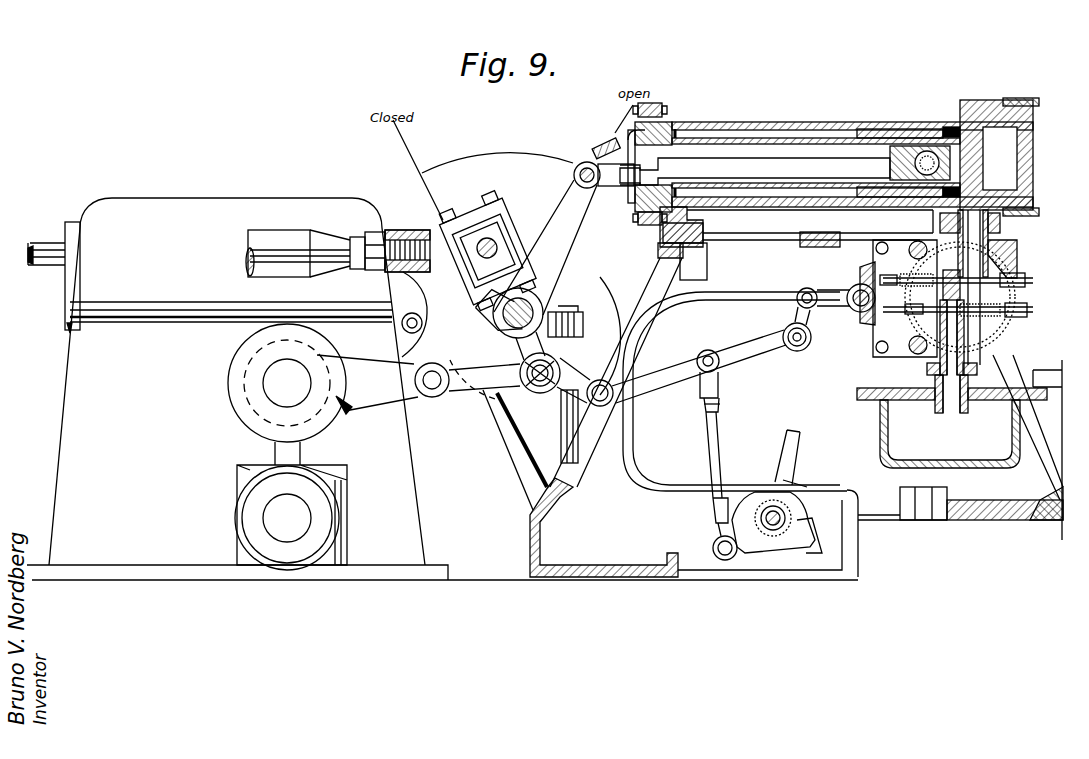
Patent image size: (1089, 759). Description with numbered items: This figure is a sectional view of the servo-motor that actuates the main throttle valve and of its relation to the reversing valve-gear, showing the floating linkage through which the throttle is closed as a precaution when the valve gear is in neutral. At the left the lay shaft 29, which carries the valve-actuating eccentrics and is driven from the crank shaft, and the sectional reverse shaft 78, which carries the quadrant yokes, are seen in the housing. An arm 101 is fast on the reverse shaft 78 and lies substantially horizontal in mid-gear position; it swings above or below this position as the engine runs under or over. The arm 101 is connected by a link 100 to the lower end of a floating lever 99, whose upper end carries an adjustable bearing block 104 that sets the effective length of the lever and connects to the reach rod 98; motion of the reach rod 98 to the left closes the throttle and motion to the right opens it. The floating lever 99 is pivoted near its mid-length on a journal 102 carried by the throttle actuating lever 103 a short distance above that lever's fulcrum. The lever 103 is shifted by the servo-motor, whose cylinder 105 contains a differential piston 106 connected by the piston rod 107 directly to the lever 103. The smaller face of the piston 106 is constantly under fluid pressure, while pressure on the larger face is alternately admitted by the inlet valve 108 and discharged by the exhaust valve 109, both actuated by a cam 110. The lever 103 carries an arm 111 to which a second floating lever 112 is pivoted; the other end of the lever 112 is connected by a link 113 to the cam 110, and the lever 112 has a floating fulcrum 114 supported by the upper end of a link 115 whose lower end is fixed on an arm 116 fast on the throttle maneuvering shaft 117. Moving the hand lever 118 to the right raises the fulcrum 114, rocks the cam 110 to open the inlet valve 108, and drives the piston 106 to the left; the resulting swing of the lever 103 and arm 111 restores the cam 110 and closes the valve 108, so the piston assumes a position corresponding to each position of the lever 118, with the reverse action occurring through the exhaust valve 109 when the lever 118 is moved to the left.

The lay shaft 29 is at (290, 518).
The reverse shaft 78 is at (287, 394).
The reach rod 98 is at (302, 235).
The floating lever 99 is at (537, 310).
The link 100 is at (463, 390).
The arm 101 is at (384, 395).
The journal 102 is at (480, 305).
The throttle actuating lever 103 is at (578, 240).
The bearing block 104 is at (507, 223).
The cylinder 105 is at (817, 120).
The piston 106 is at (780, 140).
The piston rod 107 is at (727, 168).
The inlet valve 108 is at (997, 267).
The exhaust valve 109 is at (1003, 337).
The cam 110 is at (842, 306).
The arm 111 is at (590, 362).
The floating lever 112 is at (667, 375).
The link 113 is at (795, 320).
The floating fulcrum 114 is at (722, 368).
The link 115 is at (727, 456).
The arm 116 is at (752, 550).
The throttle maneuvering shaft 117 is at (780, 523).
The hand lever 118 is at (790, 455).